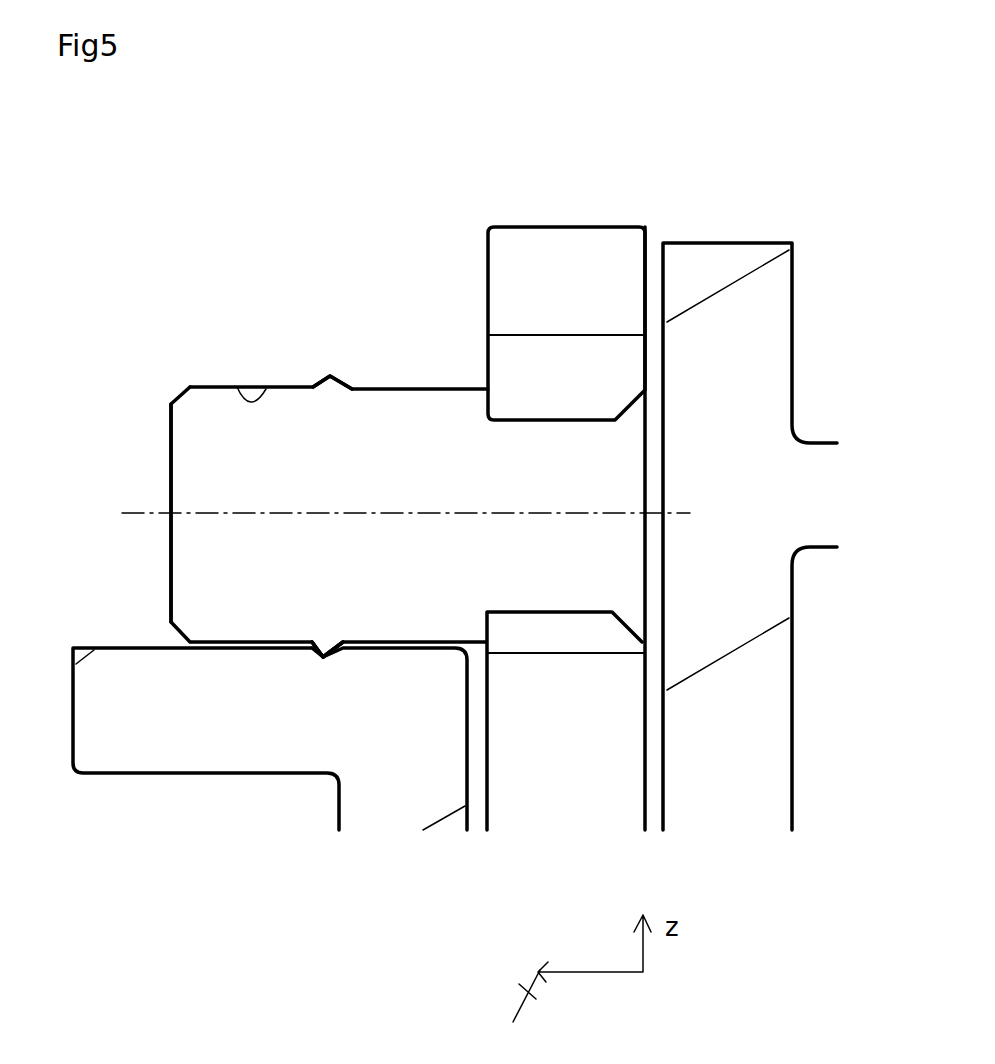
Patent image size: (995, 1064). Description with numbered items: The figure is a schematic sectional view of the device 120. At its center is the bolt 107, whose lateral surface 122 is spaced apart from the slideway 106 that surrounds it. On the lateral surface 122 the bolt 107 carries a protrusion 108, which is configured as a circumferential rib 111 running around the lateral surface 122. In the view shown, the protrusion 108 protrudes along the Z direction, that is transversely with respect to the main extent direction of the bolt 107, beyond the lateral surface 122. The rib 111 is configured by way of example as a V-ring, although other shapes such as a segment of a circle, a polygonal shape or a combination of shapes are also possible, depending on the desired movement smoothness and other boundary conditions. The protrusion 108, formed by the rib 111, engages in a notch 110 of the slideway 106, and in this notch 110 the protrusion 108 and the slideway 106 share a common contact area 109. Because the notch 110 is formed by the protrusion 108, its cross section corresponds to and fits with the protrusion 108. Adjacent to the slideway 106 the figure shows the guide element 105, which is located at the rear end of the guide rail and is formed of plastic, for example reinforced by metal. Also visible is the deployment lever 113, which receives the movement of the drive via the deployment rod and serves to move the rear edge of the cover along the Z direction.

The guide element 105 is at (155, 747).
The slideway 106 is at (280, 648).
The bolt 107 is at (207, 467).
The protrusion 108 is at (317, 382).
The contact area 109 is at (323, 658).
The notch 110 is at (328, 652).
The rib 111 is at (323, 655).
The deployment lever 113 is at (555, 248).
The device 120 is at (518, 124).
The lateral surface 122 is at (240, 393).